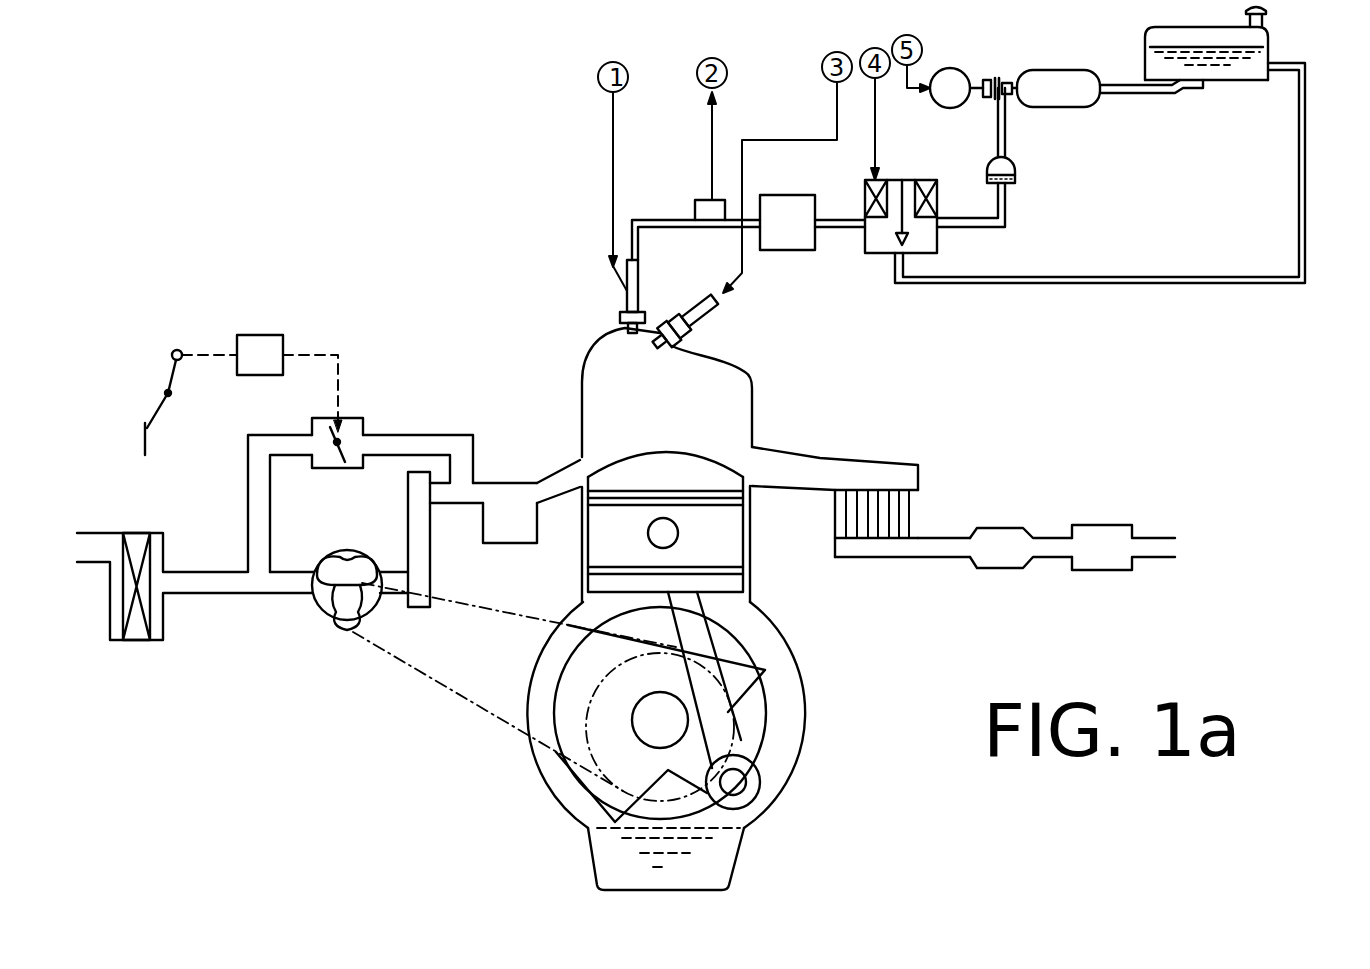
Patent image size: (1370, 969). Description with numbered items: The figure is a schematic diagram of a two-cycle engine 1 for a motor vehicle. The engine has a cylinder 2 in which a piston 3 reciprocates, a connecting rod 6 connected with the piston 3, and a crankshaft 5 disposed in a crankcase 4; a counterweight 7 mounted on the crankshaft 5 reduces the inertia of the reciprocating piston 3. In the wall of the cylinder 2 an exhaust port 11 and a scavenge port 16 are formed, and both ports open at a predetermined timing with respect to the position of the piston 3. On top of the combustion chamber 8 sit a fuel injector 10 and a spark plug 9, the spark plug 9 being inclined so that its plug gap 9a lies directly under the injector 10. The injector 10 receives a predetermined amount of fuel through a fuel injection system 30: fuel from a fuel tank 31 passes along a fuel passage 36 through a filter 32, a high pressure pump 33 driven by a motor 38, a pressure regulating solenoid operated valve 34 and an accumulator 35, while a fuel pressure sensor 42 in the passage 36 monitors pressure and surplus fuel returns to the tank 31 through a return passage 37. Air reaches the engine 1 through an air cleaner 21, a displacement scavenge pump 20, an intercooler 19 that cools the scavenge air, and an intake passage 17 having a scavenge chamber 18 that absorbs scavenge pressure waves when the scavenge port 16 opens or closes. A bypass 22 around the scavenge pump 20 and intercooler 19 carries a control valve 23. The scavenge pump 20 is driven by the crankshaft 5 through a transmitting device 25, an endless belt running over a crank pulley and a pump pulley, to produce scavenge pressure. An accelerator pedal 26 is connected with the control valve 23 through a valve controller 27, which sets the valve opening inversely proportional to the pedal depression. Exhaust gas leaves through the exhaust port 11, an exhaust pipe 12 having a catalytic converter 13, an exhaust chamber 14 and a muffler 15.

The two-cycle engine 1 is at (813, 686).
The cylinder 2 is at (592, 408).
The piston 3 is at (738, 550).
The crankcase 4 is at (542, 668).
The crankshaft 5 is at (655, 703).
The connecting rod 6 is at (725, 745).
The counterweight 7 is at (553, 717).
The combustion chamber 8 is at (736, 372).
The spark plug 9 is at (703, 310).
The plug gap 9a is at (654, 348).
The fuel injector 10 is at (624, 282).
The exhaust port 11 is at (756, 462).
The exhaust pipe 12 is at (928, 558).
The catalytic converter 13 is at (913, 512).
The exhaust chamber 14 is at (1012, 568).
The muffler 15 is at (1105, 570).
The scavenge port 16 is at (582, 465).
The intake passage 17 is at (460, 505).
The scavenge chamber 18 is at (498, 545).
The intercooler 19 is at (418, 607).
The displacement scavenge pump 20 is at (317, 617).
The air cleaner 21 is at (155, 642).
The bypass 22 is at (385, 434).
The control valve 23 is at (337, 468).
The transmitting device 25 is at (450, 692).
The accelerator pedal 26 is at (143, 440).
The valve controller 27 is at (268, 333).
The fuel injection system 30 is at (1172, 296).
The fuel tank 31 is at (1243, 83).
The filter 32 is at (1015, 167).
The high pressure pump 33 is at (1087, 72).
The pressure regulating solenoid operated valve 34 is at (925, 180).
The accumulator 35 is at (805, 250).
The fuel passage 36 is at (1005, 220).
The return passage 37 is at (1307, 263).
The motor 38 is at (960, 68).
The fuel pressure sensor 42 is at (702, 200).